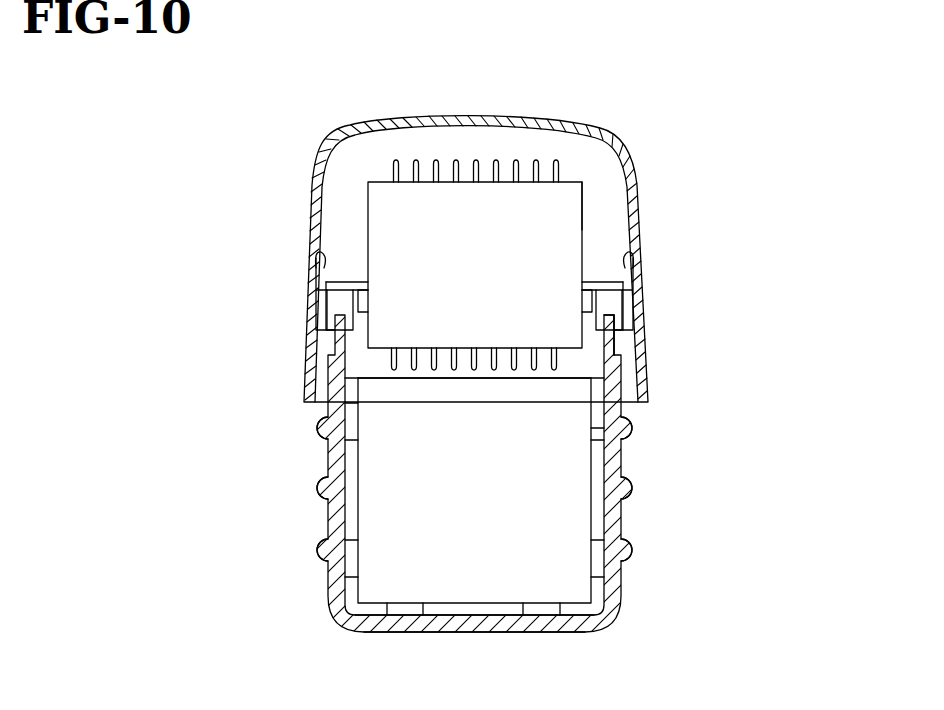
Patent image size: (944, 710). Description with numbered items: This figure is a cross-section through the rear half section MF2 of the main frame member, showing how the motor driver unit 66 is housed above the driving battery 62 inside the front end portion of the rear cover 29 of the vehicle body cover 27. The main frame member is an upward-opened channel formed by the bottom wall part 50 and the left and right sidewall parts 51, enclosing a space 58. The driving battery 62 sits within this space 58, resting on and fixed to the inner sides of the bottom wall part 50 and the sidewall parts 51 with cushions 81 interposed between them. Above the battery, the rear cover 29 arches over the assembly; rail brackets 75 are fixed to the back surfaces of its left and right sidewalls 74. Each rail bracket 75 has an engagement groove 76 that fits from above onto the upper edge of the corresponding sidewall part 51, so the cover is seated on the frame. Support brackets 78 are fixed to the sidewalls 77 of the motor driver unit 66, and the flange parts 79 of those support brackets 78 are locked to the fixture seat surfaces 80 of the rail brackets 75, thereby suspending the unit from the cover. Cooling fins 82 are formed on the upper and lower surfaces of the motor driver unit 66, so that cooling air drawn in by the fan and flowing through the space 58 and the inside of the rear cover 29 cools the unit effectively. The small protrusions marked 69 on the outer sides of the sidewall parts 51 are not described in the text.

The rear cover 29 is at (597, 130).
The vehicle body cover 27 is at (497, 241).
The sidewall of motor driver unit 77 is at (583, 195).
The motor driver unit 66 is at (487, 273).
The cooling fins 82 is at (437, 160).
The rail bracket 75 is at (631, 250).
The sidewall of rear cover 74 is at (633, 290).
The fixture seat surface 80 is at (618, 283).
The flange part 79 is at (596, 282).
The support bracket 78 is at (582, 300).
The engagement groove 76 is at (607, 318).
The space 58 is at (580, 368).
The sidewall part 51 is at (623, 518).
The protrusions 69 is at (626, 565).
The driving battery 62 is at (487, 518).
The cushion 81 is at (552, 614).
The bottom wall part 50 is at (480, 632).
The rear half section MF2 is at (622, 410).